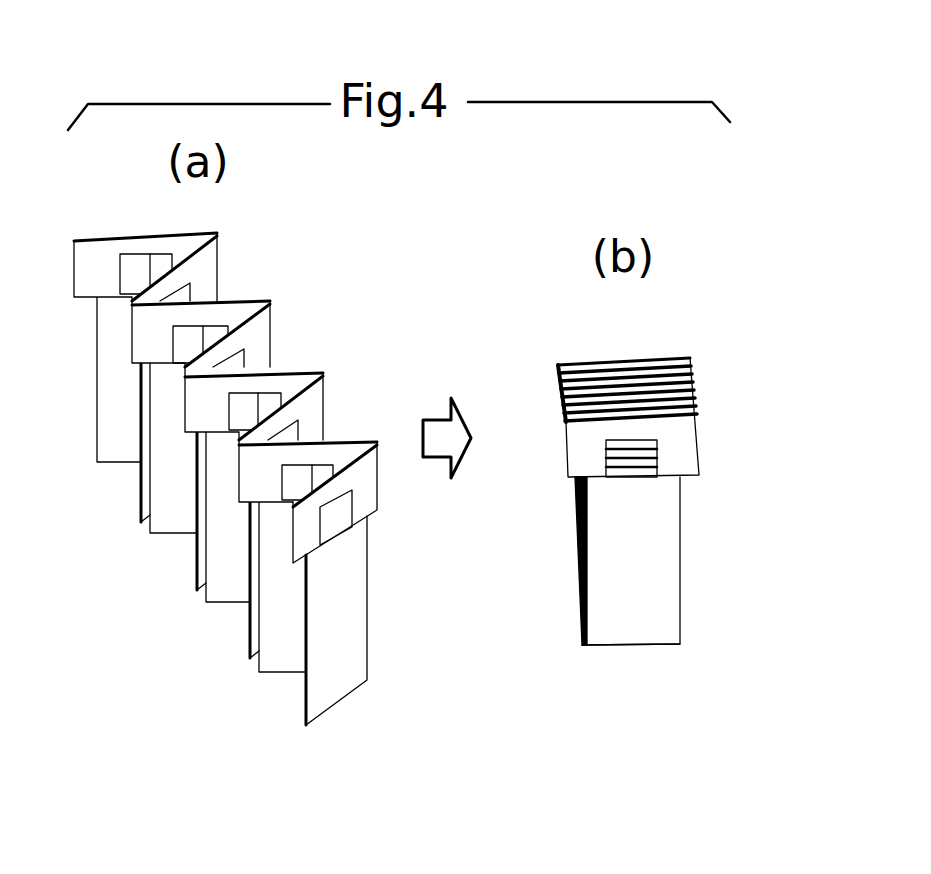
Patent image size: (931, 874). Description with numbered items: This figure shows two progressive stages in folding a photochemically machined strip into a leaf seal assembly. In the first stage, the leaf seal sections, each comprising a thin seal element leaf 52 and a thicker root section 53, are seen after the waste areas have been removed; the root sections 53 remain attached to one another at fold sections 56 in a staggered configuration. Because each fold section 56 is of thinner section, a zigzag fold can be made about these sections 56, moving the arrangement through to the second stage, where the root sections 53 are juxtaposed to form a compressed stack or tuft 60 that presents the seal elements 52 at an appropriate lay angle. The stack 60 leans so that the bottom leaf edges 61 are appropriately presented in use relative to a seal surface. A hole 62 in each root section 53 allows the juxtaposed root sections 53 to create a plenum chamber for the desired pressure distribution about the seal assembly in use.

The seal element leaf 52 is at (118, 437).
The root section 53 is at (203, 265).
The fold section 56 is at (132, 333).
The compressed stack or tuft 60 is at (720, 409).
The bottom leaf edge 61 is at (663, 645).
The hole 62 is at (628, 462).